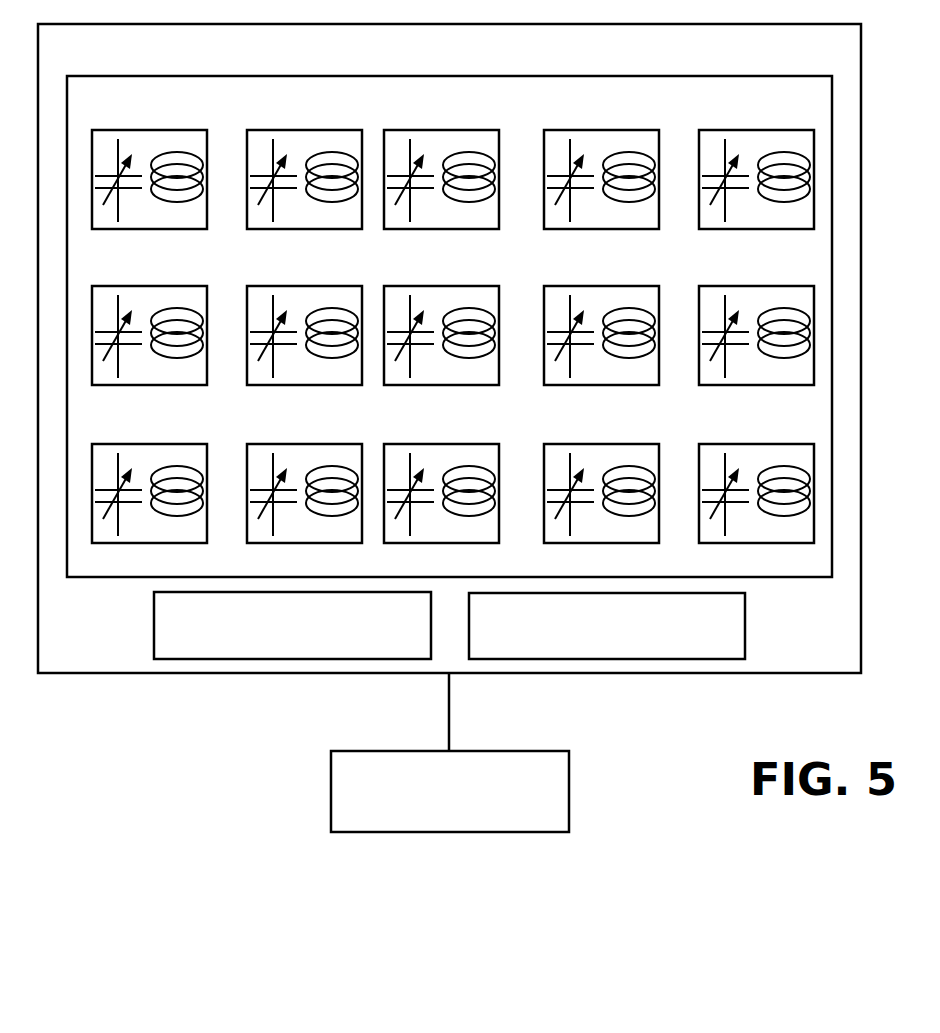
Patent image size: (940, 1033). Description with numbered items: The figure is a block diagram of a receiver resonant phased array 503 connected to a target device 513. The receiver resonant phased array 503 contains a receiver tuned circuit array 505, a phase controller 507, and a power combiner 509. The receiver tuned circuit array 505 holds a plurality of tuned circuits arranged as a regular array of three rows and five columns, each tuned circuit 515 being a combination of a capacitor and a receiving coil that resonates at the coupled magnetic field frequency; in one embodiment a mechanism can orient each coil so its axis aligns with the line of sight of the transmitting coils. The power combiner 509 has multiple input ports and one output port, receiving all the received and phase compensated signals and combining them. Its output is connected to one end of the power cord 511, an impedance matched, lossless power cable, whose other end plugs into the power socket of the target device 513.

The receiver resonant phased array 503 is at (647, 57).
The receiver tuned circuit array 505 is at (630, 109).
The phase controller 507 is at (403, 636).
The power combiner 509 is at (715, 637).
The power cord 511 is at (449, 705).
The target device 513 is at (547, 802).
The tuned circuit 515 is at (810, 153).